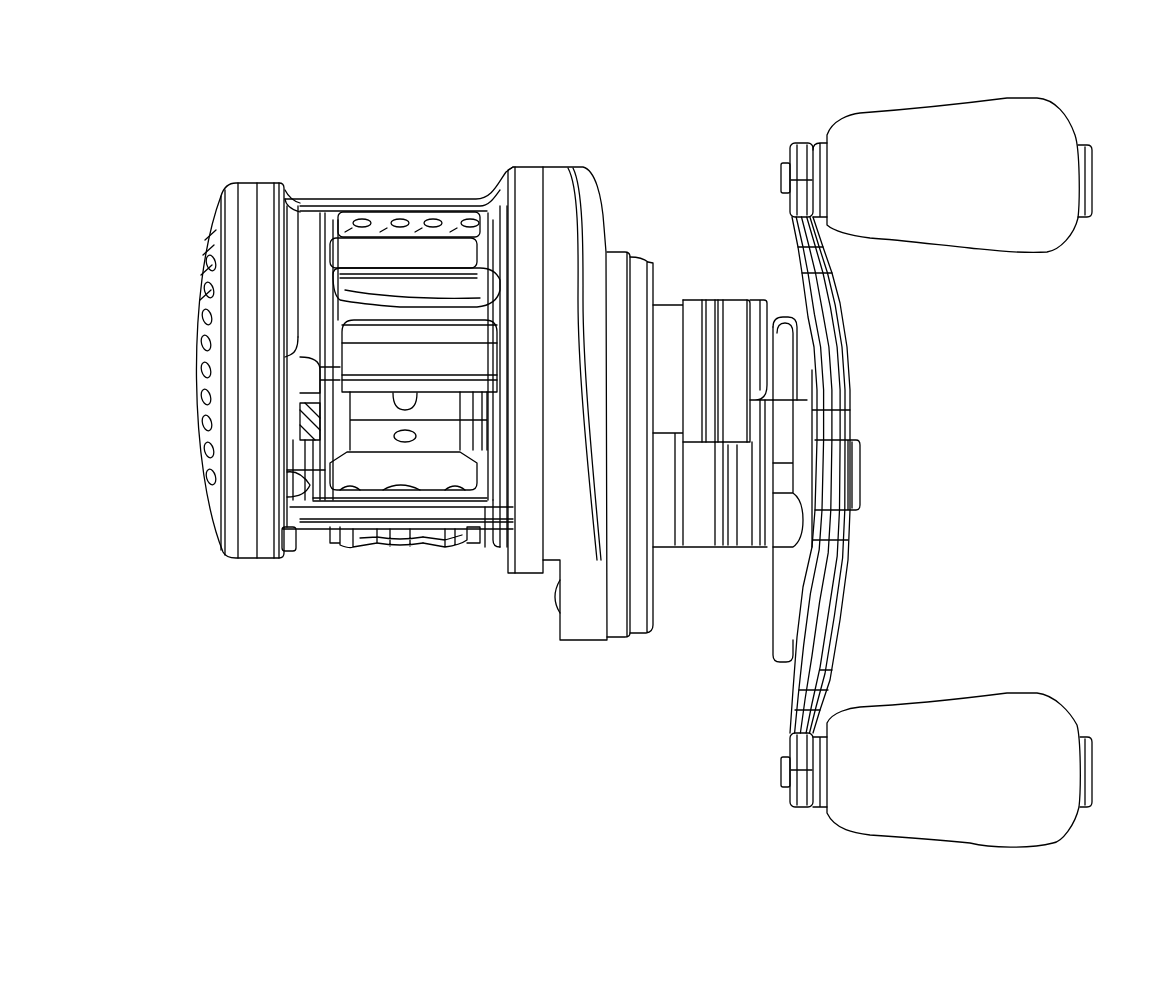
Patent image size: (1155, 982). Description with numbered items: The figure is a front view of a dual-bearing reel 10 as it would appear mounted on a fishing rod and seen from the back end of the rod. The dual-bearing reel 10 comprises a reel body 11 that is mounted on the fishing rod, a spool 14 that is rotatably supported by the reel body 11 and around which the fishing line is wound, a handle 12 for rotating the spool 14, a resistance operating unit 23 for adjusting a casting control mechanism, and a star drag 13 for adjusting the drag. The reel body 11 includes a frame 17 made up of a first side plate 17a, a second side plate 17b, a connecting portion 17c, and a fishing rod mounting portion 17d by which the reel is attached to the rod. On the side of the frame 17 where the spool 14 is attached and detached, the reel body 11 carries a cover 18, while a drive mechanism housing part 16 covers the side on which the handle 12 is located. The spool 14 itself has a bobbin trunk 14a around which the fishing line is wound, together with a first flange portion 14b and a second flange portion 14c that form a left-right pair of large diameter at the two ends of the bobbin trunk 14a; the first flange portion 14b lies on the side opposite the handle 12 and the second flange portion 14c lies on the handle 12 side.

The dual-bearing reel 10 is at (714, 104).
The reel body 11 is at (560, 153).
The handle 12 is at (860, 375).
The star drag 13 is at (768, 674).
The spool 14 is at (477, 628).
The bobbin trunk 14a is at (380, 440).
The first flange portion 14b is at (338, 508).
The second flange portion 14c is at (449, 545).
The drive mechanism housing part 16 is at (596, 204).
The frame 17 is at (417, 158).
The first side plate 17a is at (252, 560).
The second side plate 17b is at (530, 568).
The connecting portion 17c is at (364, 205).
The fishing rod mounting portion 17d is at (455, 547).
The cover 18 is at (204, 445).
The resistance operating unit 23 is at (738, 317).